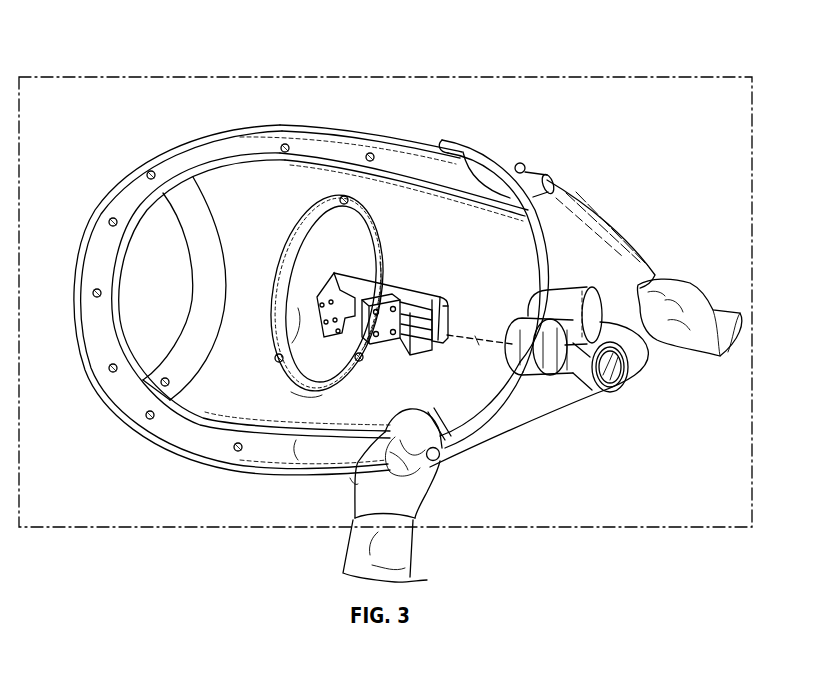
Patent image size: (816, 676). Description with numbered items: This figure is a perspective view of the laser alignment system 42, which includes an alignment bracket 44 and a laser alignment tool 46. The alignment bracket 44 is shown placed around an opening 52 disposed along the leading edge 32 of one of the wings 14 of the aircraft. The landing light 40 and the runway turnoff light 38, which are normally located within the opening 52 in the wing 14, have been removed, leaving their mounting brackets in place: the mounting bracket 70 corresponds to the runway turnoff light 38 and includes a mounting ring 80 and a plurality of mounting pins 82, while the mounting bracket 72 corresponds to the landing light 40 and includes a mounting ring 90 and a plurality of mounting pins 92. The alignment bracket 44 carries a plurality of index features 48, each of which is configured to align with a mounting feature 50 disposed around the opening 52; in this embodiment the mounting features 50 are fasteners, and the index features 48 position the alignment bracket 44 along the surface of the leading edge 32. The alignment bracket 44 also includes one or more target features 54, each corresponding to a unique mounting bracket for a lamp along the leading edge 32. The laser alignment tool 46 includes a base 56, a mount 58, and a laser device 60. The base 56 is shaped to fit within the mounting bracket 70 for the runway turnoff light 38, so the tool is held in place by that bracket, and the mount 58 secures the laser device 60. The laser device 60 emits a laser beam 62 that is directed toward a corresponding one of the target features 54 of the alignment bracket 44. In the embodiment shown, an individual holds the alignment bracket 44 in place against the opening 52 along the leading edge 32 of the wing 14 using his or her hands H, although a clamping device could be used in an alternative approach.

The wing 14 is at (527, 62).
The leading edge 32 is at (402, 88).
The runway turnoff light 38 is at (386, 226).
The landing light 40 is at (218, 197).
The laser alignment system 42 is at (597, 143).
The alignment bracket 44 is at (598, 242).
The laser alignment tool 46 is at (414, 318).
The index features 48 is at (472, 158).
The mounting features 50 is at (148, 173).
The opening 52 is at (296, 440).
The target features 54 is at (626, 352).
The base 56 is at (295, 311).
The mount 58 is at (420, 283).
The laser device 60 is at (393, 337).
The laser beam 62 is at (478, 341).
The mounting bracket 70 is at (287, 390).
The mounting bracket 72 is at (210, 243).
The mounting ring 80 is at (312, 222).
The mounting pins 82 is at (343, 195).
The mounting ring 90 is at (200, 257).
The mounting pins 92 is at (160, 388).
The hands H is at (695, 285).